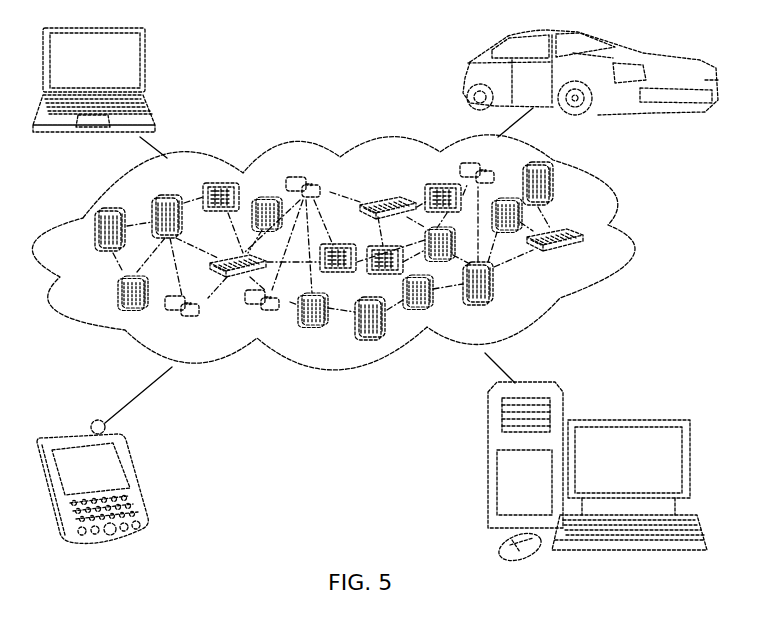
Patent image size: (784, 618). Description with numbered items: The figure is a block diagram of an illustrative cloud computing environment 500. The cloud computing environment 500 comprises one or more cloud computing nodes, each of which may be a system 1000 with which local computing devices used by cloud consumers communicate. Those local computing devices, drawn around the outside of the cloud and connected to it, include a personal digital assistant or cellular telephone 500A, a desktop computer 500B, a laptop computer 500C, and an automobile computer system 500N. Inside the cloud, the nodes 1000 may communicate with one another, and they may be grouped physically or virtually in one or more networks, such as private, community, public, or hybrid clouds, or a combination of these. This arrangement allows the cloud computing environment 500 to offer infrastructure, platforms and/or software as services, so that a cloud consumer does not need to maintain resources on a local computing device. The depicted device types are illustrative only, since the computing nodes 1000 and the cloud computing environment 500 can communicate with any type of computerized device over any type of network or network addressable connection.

The cloud computing environment 500 is at (628, 238).
The personal digital assistant or cellular telephone 500A is at (135, 478).
The desktop computer 500B is at (635, 408).
The laptop computer 500C is at (143, 65).
The automobile computer system 500N is at (463, 77).
The system 1000 is at (583, 257).